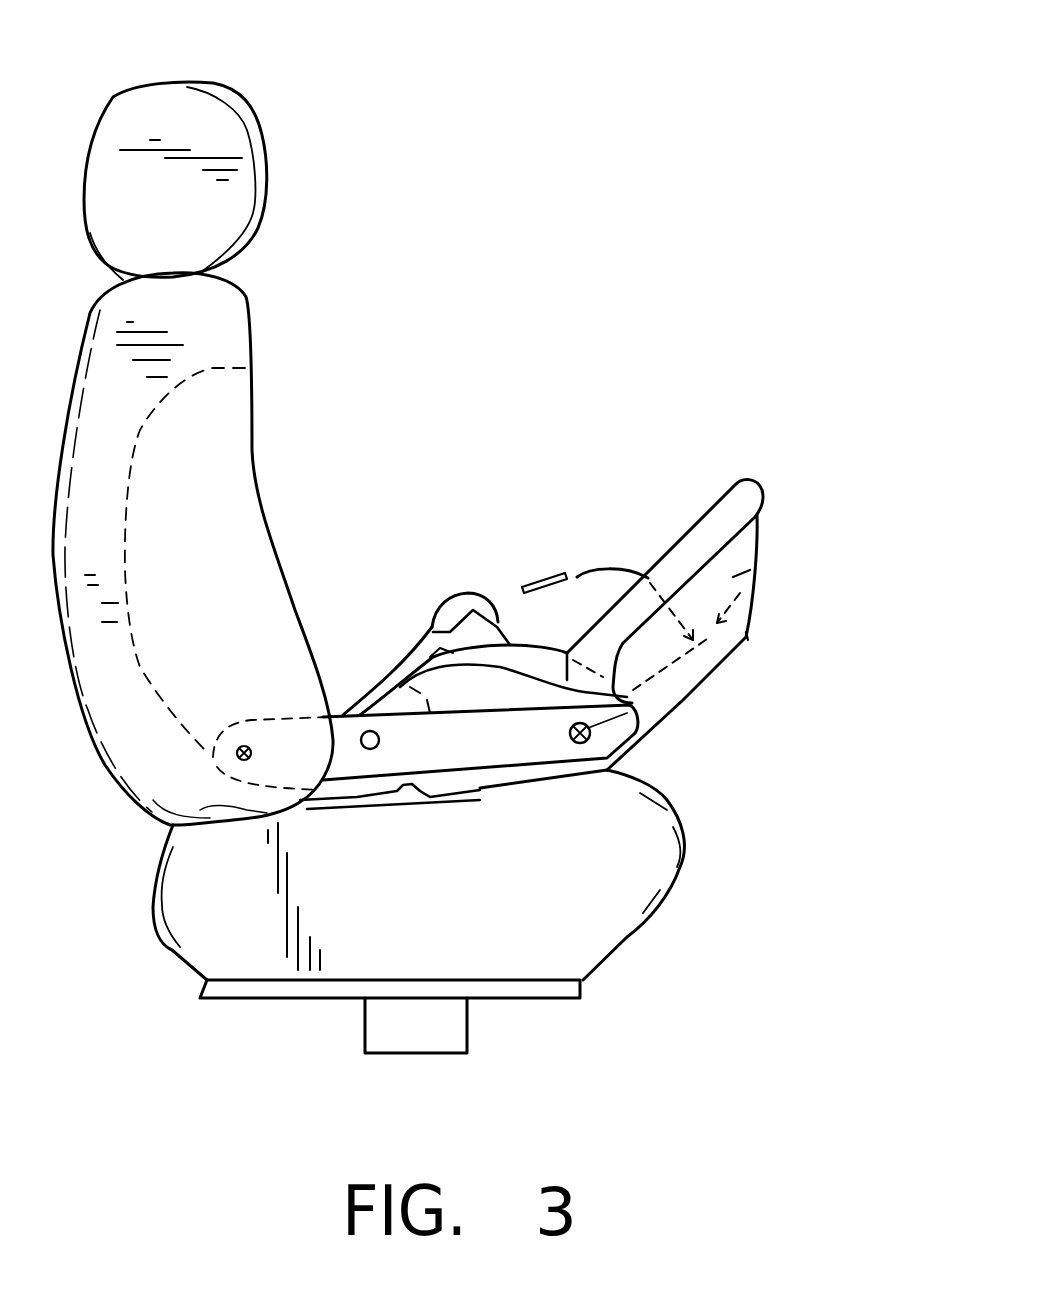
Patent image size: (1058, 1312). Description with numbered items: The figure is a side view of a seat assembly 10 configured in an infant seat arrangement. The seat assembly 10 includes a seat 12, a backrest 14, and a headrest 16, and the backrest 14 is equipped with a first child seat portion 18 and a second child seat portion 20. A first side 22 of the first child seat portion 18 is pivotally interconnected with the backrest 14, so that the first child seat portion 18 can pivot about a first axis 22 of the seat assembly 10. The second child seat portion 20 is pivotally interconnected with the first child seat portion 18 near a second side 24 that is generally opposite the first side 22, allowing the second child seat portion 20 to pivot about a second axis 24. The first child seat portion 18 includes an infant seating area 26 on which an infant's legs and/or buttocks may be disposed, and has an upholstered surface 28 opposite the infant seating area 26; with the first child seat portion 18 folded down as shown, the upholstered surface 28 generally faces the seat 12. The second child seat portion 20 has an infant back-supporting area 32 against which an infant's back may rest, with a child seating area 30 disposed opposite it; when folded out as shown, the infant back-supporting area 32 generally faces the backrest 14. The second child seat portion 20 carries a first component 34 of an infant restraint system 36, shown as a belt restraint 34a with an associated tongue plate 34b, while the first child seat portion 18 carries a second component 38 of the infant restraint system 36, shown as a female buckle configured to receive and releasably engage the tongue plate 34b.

The seat assembly 10 is at (663, 150).
The seat 12 is at (667, 800).
The backrest 14 is at (247, 310).
The headrest 16 is at (232, 90).
The first child seat portion 18 is at (495, 750).
The second child seat portion 20 is at (751, 570).
The first side 22 is at (237, 756).
The second side 24 is at (673, 703).
The infant seating area 26 is at (400, 683).
The upholstered surface 28 is at (353, 797).
The child seating area 30 is at (747, 637).
The infant back-supporting area 32 is at (748, 602).
The first component 34 is at (577, 575).
The belt restraint 34a is at (625, 572).
The tongue plate 34b is at (507, 593).
The infant restraint system 36 is at (520, 543).
The second component 38 is at (455, 590).